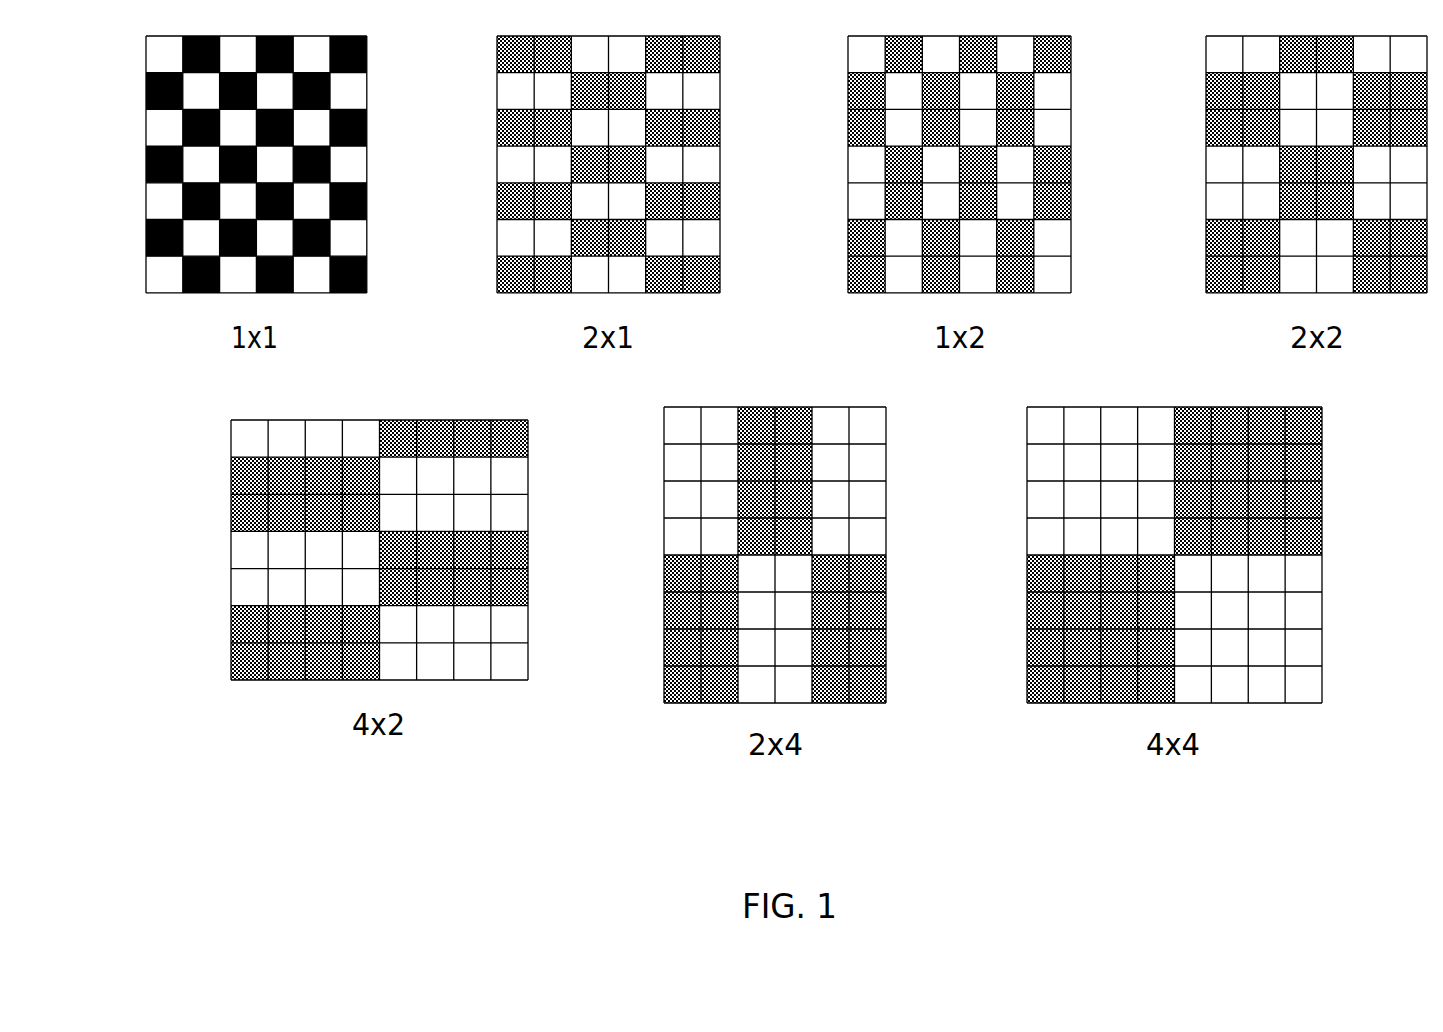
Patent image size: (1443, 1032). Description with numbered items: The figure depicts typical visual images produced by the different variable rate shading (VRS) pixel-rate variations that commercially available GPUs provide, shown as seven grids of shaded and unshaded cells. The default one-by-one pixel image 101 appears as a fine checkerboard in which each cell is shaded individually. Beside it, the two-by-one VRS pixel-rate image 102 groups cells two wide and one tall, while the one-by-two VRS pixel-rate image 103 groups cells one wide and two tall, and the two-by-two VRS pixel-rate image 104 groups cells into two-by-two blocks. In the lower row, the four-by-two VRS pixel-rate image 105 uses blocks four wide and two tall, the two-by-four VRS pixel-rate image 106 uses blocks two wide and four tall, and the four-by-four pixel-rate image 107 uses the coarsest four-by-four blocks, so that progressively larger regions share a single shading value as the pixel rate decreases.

The default 1×1 pixel image 101 is at (146, 121).
The 2×1 VRS pixel-rate image 102 is at (500, 120).
The 1×2 VRS pixel-rate image 103 is at (848, 121).
The 2×2 VRS pixel-rate image 104 is at (1203, 117).
The 4×2 VRS pixel-rate image 105 is at (230, 502).
The 2×4 VRS pixel-rate image 106 is at (662, 502).
The 4×4 pixel-rate image 107 is at (1028, 502).